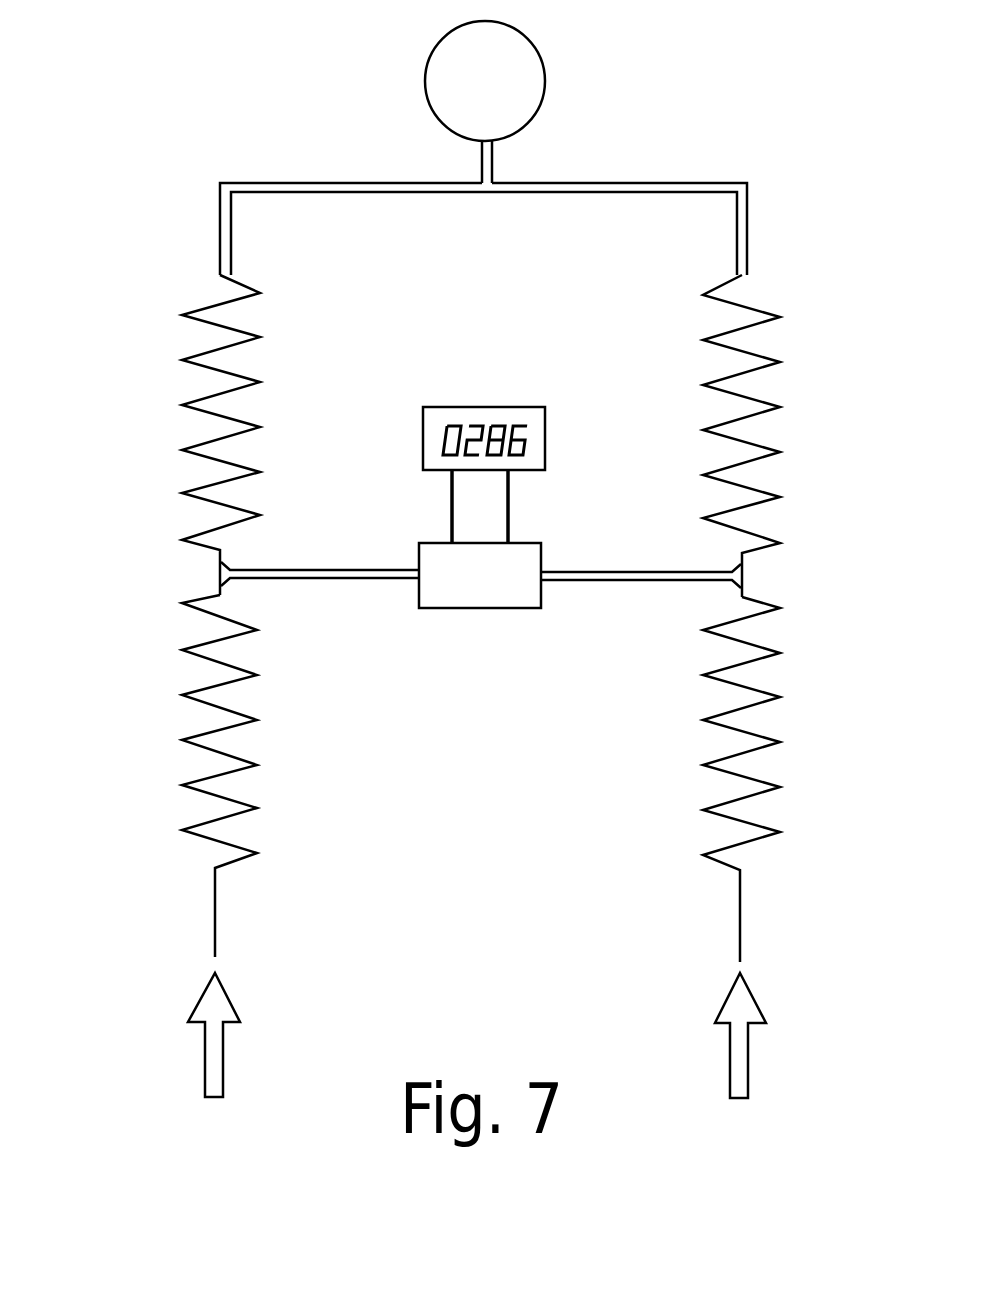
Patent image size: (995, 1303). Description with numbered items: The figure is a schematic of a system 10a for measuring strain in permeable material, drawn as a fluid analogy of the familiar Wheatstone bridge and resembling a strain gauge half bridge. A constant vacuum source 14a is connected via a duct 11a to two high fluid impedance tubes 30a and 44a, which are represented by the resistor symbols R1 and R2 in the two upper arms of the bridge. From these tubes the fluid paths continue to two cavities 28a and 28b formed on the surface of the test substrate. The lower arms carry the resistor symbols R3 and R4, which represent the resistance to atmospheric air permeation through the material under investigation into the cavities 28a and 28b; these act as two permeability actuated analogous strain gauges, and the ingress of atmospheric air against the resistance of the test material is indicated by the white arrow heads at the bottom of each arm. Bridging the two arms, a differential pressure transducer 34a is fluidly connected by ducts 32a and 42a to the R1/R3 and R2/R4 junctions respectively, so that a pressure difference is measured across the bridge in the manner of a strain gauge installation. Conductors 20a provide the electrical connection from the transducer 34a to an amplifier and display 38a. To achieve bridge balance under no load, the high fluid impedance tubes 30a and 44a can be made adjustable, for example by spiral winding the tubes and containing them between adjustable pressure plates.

The system 10a is at (473, 552).
The duct 11a is at (483, 179).
The constant vacuum source 14a is at (485, 102).
The resistor symbol R1 is at (175, 435).
The high fluid impedance tube 30a is at (163, 435).
The resistor symbol R2 is at (786, 436).
The high fluid impedance tube 44a is at (796, 436).
The resistor symbol R3 is at (170, 776).
The cavity 28a is at (163, 776).
The resistor symbol R4 is at (791, 779).
The cavity 28b is at (804, 779).
The duct 32a is at (320, 625).
The duct 42a is at (641, 625).
The differential pressure transducer 34a is at (480, 610).
The conductors 20a is at (415, 506).
The amplifier and display 38a is at (490, 376).